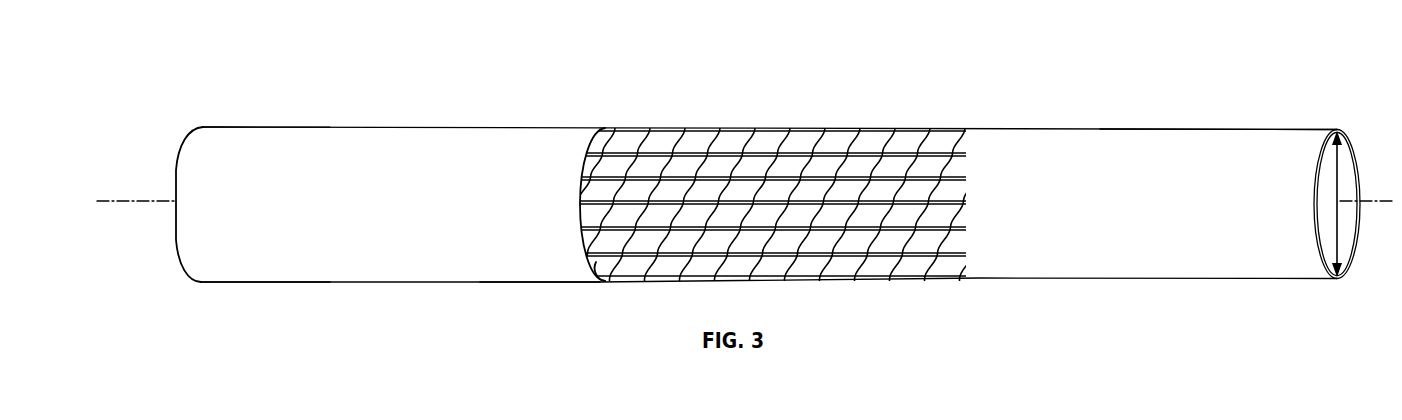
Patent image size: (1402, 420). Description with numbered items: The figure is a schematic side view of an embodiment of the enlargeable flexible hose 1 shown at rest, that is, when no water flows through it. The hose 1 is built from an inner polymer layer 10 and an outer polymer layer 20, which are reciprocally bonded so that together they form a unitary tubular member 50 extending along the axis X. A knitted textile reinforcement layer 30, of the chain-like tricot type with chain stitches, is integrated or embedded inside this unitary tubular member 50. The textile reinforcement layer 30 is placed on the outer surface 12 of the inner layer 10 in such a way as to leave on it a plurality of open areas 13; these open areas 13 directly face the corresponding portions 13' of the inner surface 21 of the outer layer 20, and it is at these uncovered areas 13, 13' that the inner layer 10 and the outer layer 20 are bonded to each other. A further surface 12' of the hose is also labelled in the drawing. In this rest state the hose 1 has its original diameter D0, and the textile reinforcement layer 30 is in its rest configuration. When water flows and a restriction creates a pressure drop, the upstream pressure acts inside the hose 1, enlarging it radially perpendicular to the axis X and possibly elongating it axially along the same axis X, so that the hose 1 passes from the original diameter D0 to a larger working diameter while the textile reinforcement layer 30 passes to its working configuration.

The enlargeable flexible hose 1 is at (230, 87).
The inner polymer layer 10 is at (1112, 208).
The outer surface of the inner layer 12 is at (968, 96).
The outer surface of proximal portion 12' is at (540, 297).
The open areas 13 is at (770, 171).
The corresponding portions of the inner surface of the outer layer 13' is at (597, 171).
The outer polymer layer 20 is at (259, 210).
The inner surface of the outer layer 21 is at (606, 282).
The knitted textile reinforcement layer 30 is at (814, 112).
The unitary tubular member 50 is at (164, 125).
The axis X is at (137, 201).
The original diameter D0 is at (1337, 232).